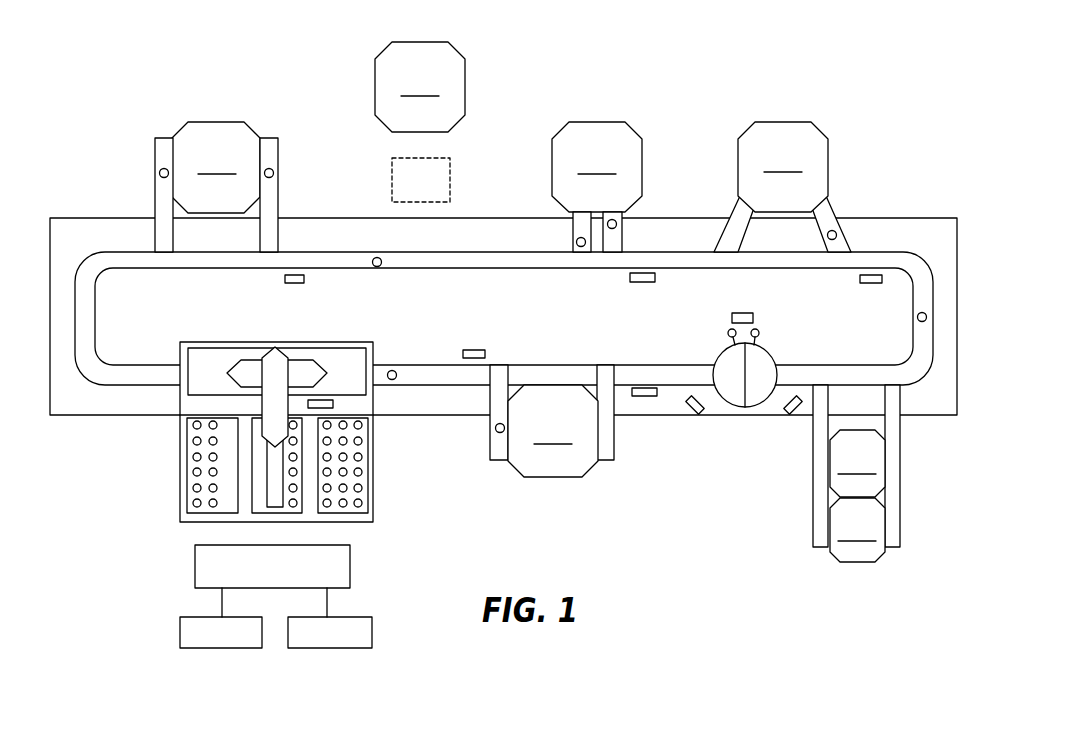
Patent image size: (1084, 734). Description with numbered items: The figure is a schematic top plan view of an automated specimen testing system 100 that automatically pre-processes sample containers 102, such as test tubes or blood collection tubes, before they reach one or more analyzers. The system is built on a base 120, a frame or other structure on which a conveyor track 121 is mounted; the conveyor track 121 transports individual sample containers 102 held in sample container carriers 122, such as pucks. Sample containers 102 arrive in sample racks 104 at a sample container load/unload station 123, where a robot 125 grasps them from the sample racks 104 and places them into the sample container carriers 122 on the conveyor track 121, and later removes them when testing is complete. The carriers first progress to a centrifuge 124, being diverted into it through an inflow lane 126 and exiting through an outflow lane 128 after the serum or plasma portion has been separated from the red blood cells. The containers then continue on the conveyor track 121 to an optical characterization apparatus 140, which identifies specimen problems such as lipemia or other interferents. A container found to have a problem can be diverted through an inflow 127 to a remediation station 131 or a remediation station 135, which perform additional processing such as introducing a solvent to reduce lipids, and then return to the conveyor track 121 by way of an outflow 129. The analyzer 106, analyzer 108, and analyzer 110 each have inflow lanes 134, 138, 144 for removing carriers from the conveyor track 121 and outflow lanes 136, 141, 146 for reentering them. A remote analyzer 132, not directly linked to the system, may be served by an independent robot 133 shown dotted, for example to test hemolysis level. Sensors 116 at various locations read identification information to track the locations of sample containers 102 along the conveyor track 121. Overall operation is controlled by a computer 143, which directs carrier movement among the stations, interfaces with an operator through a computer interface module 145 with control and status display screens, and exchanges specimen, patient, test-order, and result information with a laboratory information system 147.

The automated specimen testing system 100 is at (168, 64).
The sample container 102 is at (345, 505).
The sample rack 104 is at (303, 492).
The analyzer 106 is at (783, 167).
The analyzer 108 is at (597, 167).
The analyzer 110 is at (216, 167).
The sensor 116 is at (304, 279).
The base 120 is at (82, 218).
The conveyor track 121 is at (96, 312).
The sample container carrier 122 is at (381, 266).
The sample container load/unload station 123 is at (257, 454).
The centrifuge 124 is at (553, 431).
The robot 125 is at (208, 378).
The inflow lane 126 is at (490, 445).
The inflow 127 is at (813, 458).
The outflow lane 128 is at (614, 445).
The outflow 129 is at (900, 458).
The remediation station 131 is at (857, 463).
The remote analyzer 132 is at (420, 87).
The independent robot 133 is at (452, 174).
The inflow lane 134 is at (838, 212).
The remediation station 135 is at (857, 530).
The outflow lane 136 is at (729, 212).
The inflow lane 138 is at (622, 220).
The optical characterization apparatus 140 is at (722, 433).
The outflow lane 141 is at (560, 220).
The computer 143 is at (195, 572).
The inflow lane 144 is at (279, 208).
The computer interface module 145 is at (180, 628).
The outflow lane 146 is at (153, 210).
The laboratory information system 147 is at (320, 650).